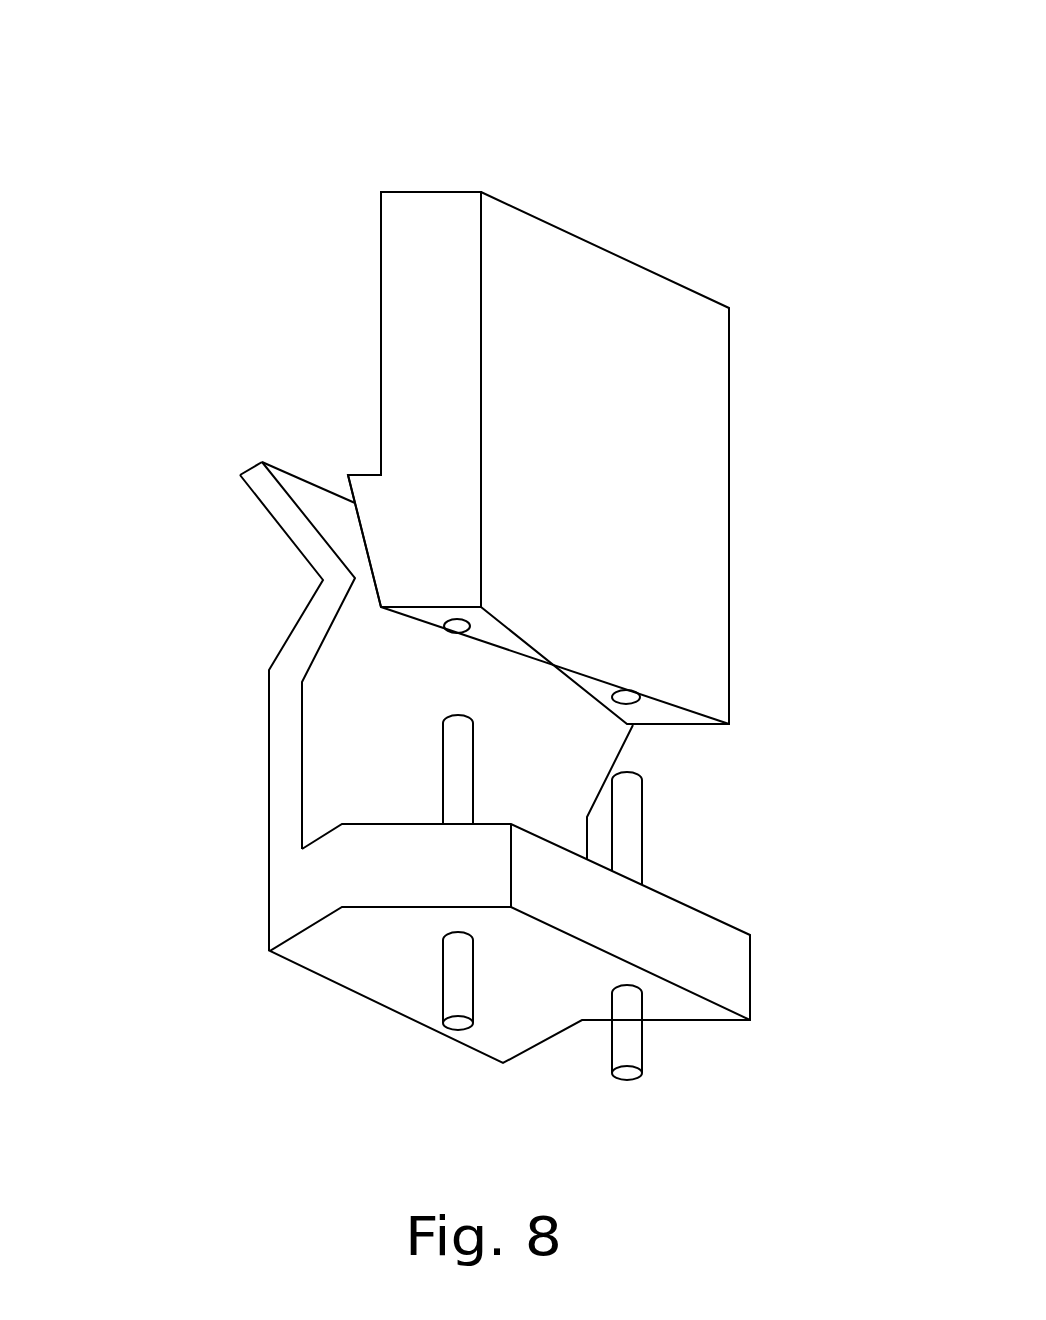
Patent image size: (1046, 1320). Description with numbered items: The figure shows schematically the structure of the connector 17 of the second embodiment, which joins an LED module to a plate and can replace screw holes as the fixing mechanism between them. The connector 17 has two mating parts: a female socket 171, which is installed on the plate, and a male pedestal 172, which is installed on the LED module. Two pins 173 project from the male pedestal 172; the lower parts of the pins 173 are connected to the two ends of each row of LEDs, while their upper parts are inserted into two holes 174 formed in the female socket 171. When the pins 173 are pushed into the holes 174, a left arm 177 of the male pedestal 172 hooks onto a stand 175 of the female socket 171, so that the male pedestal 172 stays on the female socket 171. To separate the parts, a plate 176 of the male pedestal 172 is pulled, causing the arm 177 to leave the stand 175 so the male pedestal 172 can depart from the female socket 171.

The connector 17 is at (603, 197).
The female socket 171 is at (693, 420).
The male pedestal 172 is at (700, 930).
The pins 173 is at (622, 827).
The holes 174 is at (628, 693).
The stand 175 is at (357, 478).
The plate 176 is at (257, 477).
The left arm 177 is at (290, 658).